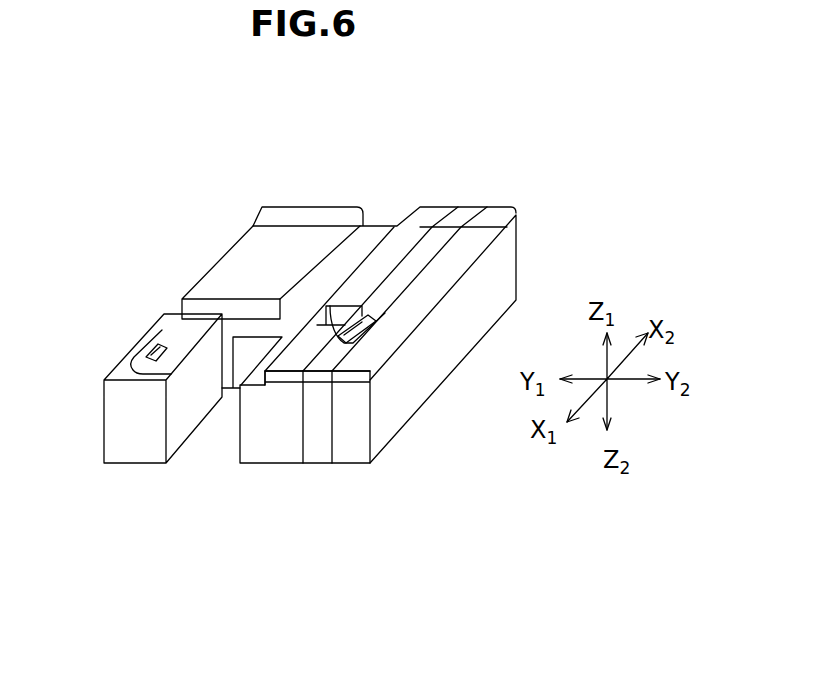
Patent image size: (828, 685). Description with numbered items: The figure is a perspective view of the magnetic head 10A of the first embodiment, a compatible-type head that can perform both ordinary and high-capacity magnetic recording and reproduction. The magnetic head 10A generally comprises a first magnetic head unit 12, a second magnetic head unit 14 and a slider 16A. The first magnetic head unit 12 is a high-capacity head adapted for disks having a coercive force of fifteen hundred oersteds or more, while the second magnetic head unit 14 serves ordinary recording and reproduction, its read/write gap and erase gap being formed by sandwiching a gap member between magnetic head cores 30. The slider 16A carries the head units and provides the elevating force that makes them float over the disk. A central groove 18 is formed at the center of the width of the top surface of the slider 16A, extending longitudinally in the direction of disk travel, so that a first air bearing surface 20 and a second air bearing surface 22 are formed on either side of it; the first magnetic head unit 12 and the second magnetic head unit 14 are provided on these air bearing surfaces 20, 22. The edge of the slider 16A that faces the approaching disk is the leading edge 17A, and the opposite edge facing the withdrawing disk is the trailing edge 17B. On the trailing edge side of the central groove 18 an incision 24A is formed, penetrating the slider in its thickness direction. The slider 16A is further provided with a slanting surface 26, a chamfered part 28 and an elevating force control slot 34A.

The magnetic head 10A is at (497, 74).
The first magnetic head unit 12 is at (142, 338).
The second magnetic head unit 14 is at (388, 337).
The slider 16A is at (413, 426).
The leading edge 17A is at (322, 220).
The trailing edge 17B is at (133, 387).
The central groove 18 is at (372, 237).
The first air bearing surface 20 is at (263, 257).
The second air bearing surface 22 is at (407, 238).
The incision 24A is at (220, 430).
The slanting surface 26 is at (291, 222).
The chamfered part 28 is at (205, 272).
The magnetic head cores 30 is at (318, 445).
The elevating force control slot 34A is at (335, 322).